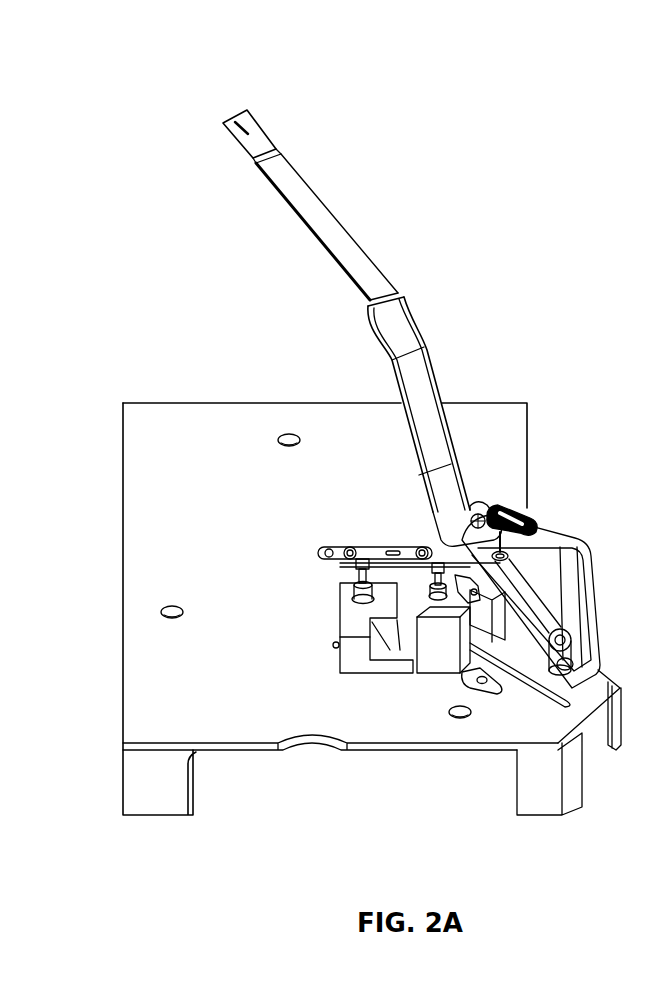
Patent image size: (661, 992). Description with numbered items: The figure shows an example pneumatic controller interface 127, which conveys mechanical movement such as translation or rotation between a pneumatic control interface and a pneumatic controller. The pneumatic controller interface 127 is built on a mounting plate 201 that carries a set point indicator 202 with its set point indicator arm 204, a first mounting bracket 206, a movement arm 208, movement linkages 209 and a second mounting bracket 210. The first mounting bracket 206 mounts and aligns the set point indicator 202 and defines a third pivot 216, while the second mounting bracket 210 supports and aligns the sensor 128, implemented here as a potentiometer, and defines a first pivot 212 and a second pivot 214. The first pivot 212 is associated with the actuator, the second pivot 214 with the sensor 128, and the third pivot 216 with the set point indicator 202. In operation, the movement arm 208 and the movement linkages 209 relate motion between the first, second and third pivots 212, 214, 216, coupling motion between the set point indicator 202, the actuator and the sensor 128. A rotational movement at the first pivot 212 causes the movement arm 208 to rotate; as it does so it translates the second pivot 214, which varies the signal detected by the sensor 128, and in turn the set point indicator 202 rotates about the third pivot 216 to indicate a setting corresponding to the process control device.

The pneumatic controller interface 127 is at (160, 46).
The sensor 128 is at (335, 645).
The mounting plate 201 is at (148, 567).
The set point indicator 202 is at (303, 197).
The set point indicator arm 204 is at (420, 388).
The first mounting bracket 206 is at (558, 552).
The movement arm 208 is at (400, 550).
The movement linkages 209 is at (350, 573).
The second mounting bracket 210 is at (425, 647).
The first pivot 212 is at (440, 585).
The second pivot 214 is at (350, 599).
The third pivot 216 is at (540, 560).